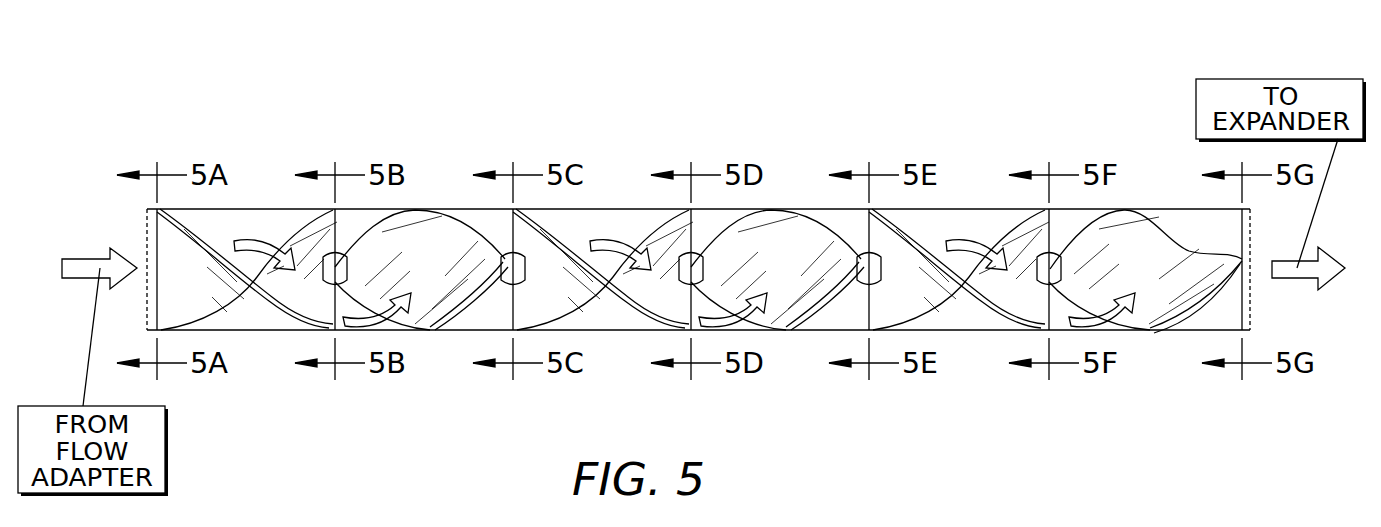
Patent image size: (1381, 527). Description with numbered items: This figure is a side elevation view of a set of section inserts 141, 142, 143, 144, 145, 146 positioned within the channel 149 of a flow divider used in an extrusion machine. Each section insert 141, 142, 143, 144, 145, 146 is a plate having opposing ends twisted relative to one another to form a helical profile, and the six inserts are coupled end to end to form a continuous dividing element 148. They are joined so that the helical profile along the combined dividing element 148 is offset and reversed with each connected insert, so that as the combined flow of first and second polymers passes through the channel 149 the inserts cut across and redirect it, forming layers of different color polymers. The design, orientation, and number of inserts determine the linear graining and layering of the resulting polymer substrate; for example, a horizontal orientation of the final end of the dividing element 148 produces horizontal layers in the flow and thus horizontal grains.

The section insert 141 is at (257, 360).
The section insert 142 is at (430, 360).
The section insert 143 is at (615, 360).
The section insert 144 is at (795, 360).
The section insert 145 is at (972, 360).
The section insert 146 is at (1162, 360).
The dividing element 148 is at (978, 127).
The channel 149 is at (626, 209).